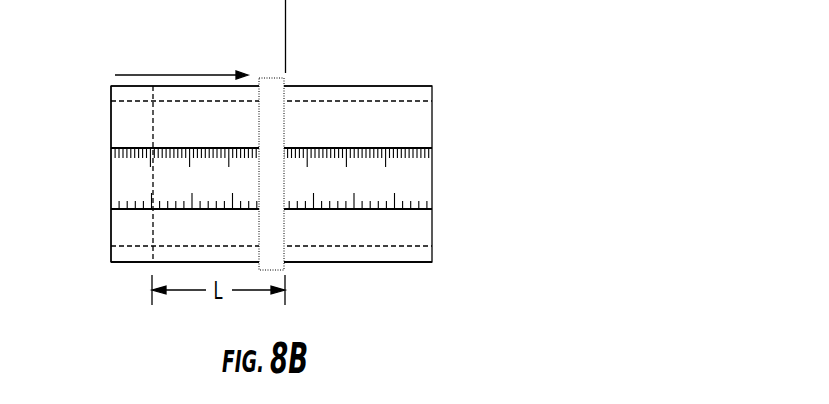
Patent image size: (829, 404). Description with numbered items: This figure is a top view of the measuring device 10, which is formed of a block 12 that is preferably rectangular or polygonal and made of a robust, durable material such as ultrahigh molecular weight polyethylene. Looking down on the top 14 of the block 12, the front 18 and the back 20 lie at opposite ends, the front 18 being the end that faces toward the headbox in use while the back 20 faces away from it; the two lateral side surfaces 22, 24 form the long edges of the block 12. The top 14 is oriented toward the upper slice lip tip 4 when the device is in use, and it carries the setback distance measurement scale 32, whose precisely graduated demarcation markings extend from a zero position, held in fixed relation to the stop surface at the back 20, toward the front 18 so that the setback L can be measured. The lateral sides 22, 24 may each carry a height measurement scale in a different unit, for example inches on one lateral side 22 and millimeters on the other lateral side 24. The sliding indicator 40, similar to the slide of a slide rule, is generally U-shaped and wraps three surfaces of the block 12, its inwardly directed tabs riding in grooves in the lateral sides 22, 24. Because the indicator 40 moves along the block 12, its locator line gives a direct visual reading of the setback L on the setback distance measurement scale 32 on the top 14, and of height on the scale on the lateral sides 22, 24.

The upper slice lip tip 4 is at (331, 36).
The measuring device 10 is at (326, 160).
The block 12 is at (131, 131).
The top 14 is at (417, 225).
The front 18 is at (432, 215).
The back 20 is at (110, 226).
The lateral side surface 22 is at (392, 262).
The lateral side surface 24 is at (392, 86).
The setback distance measurement scale 32 is at (410, 167).
The sliding indicator 40 is at (272, 78).